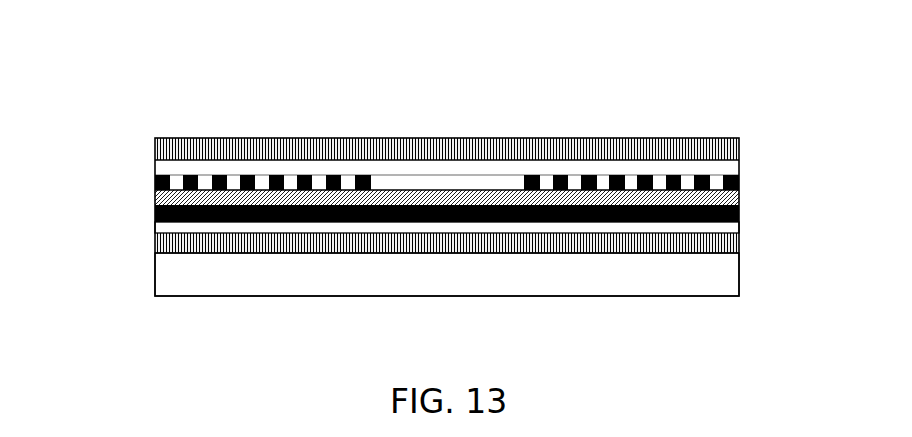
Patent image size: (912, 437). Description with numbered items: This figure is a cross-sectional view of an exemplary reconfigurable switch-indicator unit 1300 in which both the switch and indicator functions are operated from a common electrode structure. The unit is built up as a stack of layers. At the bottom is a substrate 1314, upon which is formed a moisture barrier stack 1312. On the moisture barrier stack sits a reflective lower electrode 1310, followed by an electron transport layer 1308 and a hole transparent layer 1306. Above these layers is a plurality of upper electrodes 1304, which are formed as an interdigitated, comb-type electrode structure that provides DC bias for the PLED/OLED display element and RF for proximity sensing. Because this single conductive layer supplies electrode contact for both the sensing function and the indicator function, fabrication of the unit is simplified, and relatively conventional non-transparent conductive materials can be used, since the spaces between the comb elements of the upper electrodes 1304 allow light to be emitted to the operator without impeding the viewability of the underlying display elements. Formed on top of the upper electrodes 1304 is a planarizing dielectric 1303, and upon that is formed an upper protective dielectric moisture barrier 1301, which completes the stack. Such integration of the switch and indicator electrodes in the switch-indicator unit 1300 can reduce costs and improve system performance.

The switch-indicator unit 1300 is at (788, 82).
The upper protective dielectric moisture barrier 1301 is at (447, 138).
The planarizing dielectric 1303 is at (155, 167).
The upper electrodes 1304 is at (155, 183).
The hole transparent layer 1306 is at (155, 198).
The electron transport layer 1308 is at (155, 213).
The reflective lower electrode 1310 is at (155, 228).
The moisture barrier stack 1312 is at (740, 242).
The substrate 1314 is at (740, 268).